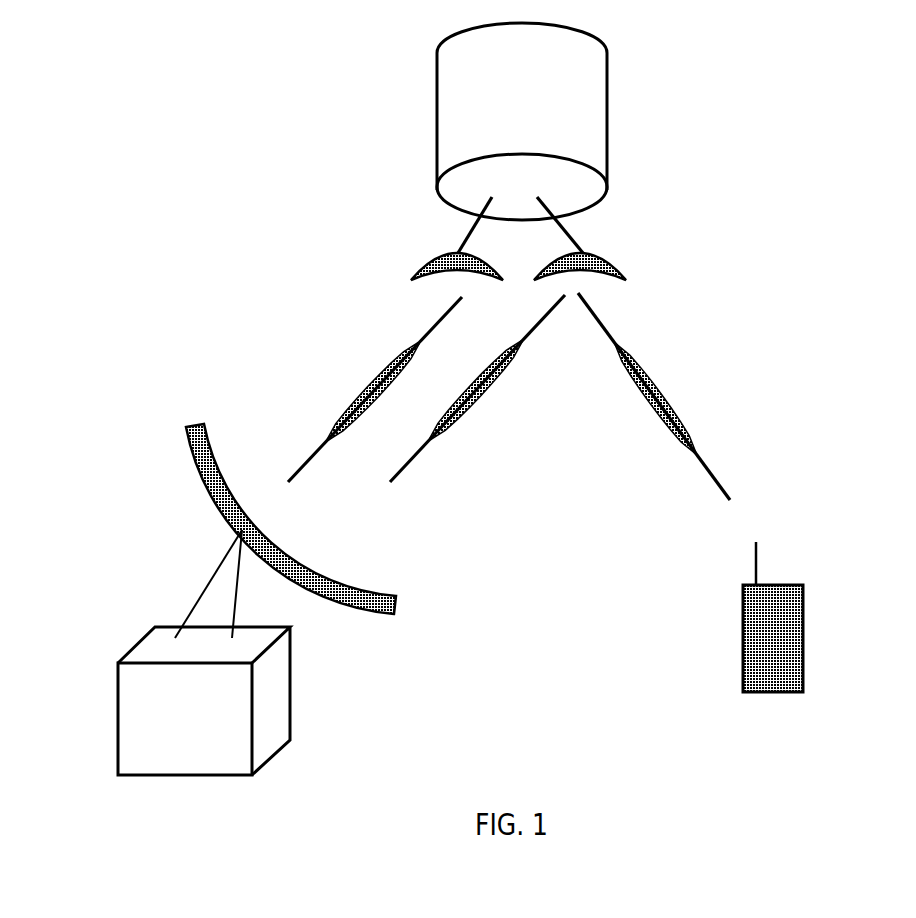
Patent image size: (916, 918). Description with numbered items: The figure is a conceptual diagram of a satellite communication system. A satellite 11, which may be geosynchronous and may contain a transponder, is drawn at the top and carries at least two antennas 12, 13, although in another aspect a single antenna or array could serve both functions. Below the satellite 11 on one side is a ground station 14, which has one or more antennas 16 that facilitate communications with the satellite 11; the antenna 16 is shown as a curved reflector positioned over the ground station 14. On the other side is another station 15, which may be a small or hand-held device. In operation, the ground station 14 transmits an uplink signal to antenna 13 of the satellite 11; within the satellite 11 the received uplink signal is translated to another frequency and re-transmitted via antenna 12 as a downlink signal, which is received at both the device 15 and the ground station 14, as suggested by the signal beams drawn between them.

The satellite 11 is at (607, 97).
The antenna 12 is at (608, 252).
The antenna 13 is at (433, 253).
The ground station 14 is at (145, 630).
The other station 15 is at (803, 590).
The antenna 16 is at (182, 432).